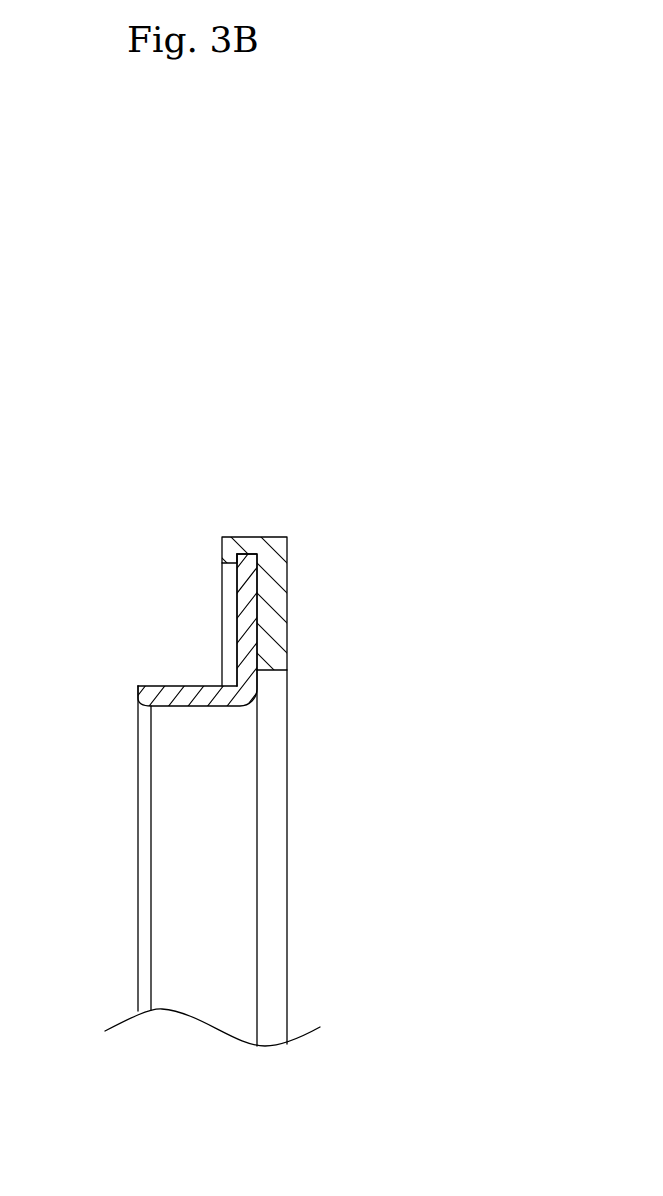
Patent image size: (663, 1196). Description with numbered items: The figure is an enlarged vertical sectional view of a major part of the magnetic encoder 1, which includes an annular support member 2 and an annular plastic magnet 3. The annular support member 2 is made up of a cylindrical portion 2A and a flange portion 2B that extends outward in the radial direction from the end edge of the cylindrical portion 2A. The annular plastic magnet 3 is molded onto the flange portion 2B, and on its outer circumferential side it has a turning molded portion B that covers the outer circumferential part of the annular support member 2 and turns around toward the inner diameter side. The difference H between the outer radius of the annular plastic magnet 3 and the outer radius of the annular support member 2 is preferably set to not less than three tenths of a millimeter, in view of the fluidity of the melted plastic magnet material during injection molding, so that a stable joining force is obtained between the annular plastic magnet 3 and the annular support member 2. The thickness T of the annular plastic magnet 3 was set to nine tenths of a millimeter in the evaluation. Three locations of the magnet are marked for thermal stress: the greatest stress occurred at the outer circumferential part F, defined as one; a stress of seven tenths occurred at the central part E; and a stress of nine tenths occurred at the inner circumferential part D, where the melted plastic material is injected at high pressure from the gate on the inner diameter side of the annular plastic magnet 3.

The magnetic encoder 1 is at (307, 528).
The annular support member 2 is at (188, 628).
The cylindrical portion 2A is at (180, 687).
The flange portion 2B is at (242, 619).
The annular plastic magnet 3 is at (305, 632).
The turning molded portion B is at (227, 535).
The outer circumferential part F is at (247, 540).
The central part E is at (288, 580).
The inner circumferential part D is at (272, 677).
The difference H is at (233, 537).
The thickness T is at (228, 885).